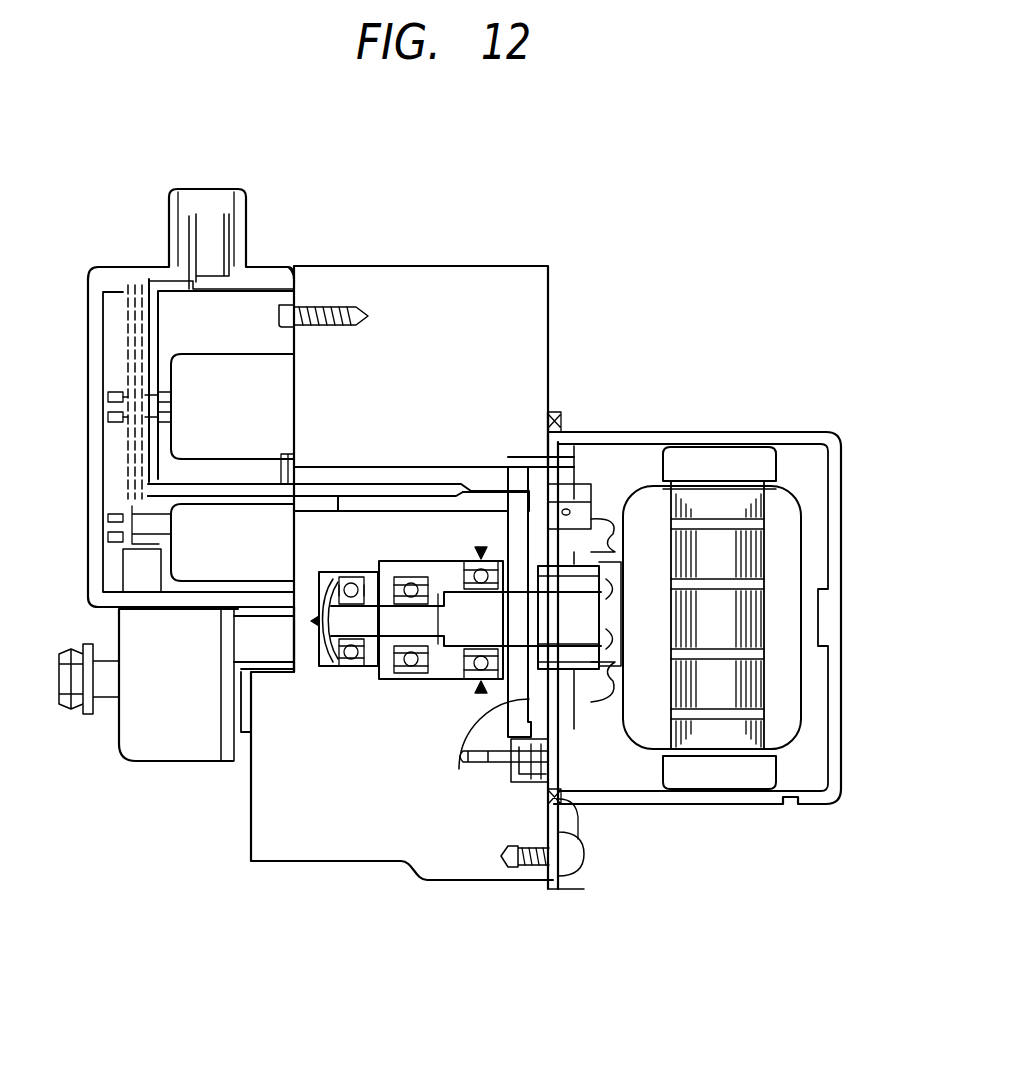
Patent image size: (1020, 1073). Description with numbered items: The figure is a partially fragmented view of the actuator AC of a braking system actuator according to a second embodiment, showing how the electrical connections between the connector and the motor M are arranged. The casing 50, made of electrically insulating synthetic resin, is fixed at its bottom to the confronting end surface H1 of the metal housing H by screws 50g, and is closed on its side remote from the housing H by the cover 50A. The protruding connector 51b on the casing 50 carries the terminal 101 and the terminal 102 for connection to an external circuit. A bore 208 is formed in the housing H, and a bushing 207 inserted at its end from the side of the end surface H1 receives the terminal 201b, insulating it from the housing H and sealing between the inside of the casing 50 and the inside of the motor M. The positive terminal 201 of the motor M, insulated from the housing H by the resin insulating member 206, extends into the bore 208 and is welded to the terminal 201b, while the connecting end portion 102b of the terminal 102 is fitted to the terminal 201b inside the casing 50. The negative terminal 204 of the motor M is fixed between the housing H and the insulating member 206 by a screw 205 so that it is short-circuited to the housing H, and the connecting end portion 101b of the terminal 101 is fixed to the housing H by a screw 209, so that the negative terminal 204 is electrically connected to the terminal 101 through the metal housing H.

The alternator assembly AC is at (569, 222).
The cover 50A is at (86, 290).
The casing 50 is at (259, 272).
The connector 51b is at (170, 190).
The terminal 101 is at (193, 216).
The connecting end portion 101b is at (289, 276).
The terminal 102 is at (222, 267).
The connecting end portion 102b is at (203, 490).
The housing H is at (499, 282).
The end surface H1 is at (322, 300).
The screw 209 is at (336, 303).
The bushing 207 is at (317, 503).
The bore 208 is at (407, 478).
The positive terminal 201 is at (517, 497).
The terminal 201b is at (431, 488).
The insulating member 206 is at (564, 440).
The negative terminal 204 is at (463, 760).
The screw 205 is at (528, 757).
The motor M is at (715, 448).
The screw 50g is at (228, 648).